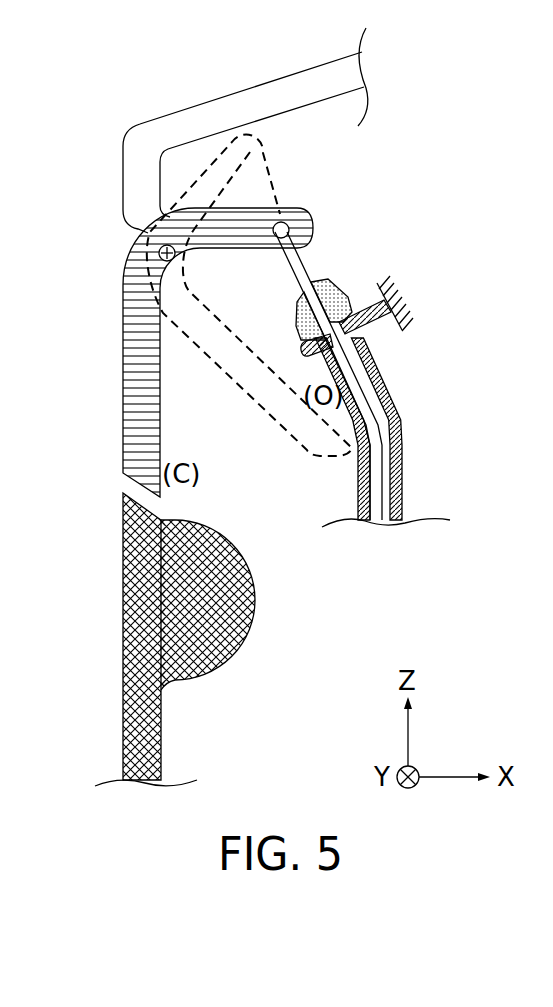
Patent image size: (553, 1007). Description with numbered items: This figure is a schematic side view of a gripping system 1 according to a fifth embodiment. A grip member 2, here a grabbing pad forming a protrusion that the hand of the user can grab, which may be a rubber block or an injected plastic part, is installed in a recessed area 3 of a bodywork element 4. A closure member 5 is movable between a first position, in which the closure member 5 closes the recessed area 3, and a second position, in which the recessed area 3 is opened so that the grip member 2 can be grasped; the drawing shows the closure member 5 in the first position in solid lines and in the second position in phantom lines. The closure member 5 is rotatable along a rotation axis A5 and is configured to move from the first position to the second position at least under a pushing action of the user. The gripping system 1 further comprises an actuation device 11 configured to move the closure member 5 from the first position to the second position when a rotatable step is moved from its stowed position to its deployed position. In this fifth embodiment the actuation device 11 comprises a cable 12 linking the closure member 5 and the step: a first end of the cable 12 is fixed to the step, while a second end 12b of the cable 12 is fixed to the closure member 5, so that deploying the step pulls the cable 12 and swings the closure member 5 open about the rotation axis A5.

The gripping system 1 is at (168, 84).
The rotation axis A5 is at (158, 253).
The second end of the cable 12b is at (288, 225).
The actuation device 11 is at (332, 256).
The closure member 5 is at (123, 383).
The cable 12 is at (377, 393).
The bodywork element 4 is at (123, 577).
The recessed area 3 is at (232, 508).
The grip member 2 is at (217, 602).